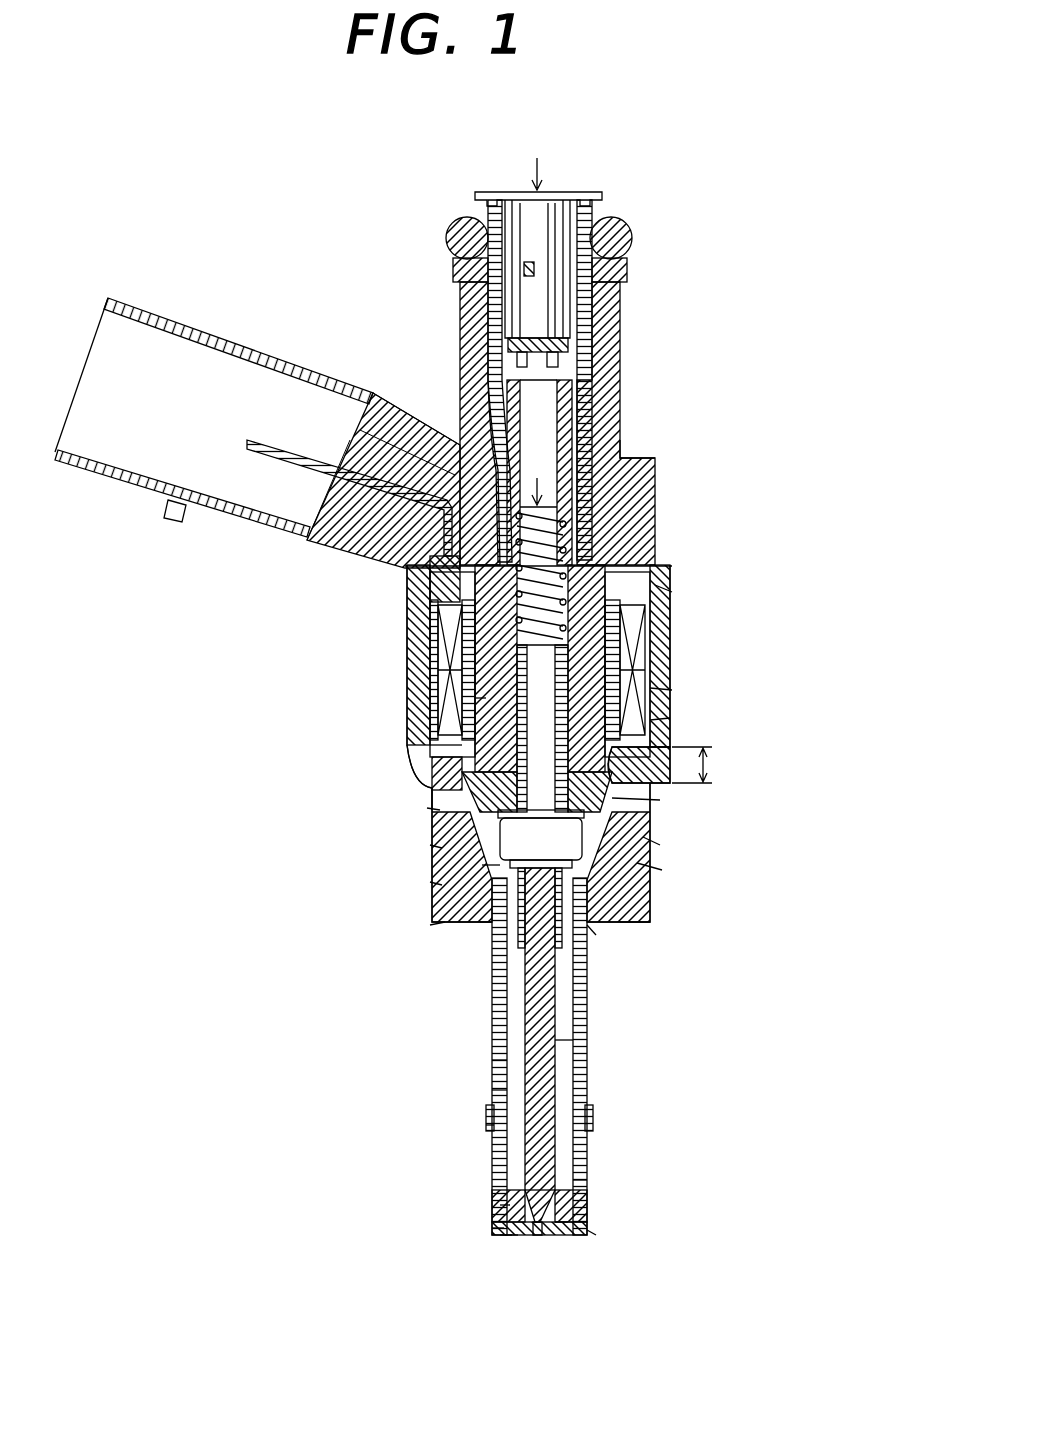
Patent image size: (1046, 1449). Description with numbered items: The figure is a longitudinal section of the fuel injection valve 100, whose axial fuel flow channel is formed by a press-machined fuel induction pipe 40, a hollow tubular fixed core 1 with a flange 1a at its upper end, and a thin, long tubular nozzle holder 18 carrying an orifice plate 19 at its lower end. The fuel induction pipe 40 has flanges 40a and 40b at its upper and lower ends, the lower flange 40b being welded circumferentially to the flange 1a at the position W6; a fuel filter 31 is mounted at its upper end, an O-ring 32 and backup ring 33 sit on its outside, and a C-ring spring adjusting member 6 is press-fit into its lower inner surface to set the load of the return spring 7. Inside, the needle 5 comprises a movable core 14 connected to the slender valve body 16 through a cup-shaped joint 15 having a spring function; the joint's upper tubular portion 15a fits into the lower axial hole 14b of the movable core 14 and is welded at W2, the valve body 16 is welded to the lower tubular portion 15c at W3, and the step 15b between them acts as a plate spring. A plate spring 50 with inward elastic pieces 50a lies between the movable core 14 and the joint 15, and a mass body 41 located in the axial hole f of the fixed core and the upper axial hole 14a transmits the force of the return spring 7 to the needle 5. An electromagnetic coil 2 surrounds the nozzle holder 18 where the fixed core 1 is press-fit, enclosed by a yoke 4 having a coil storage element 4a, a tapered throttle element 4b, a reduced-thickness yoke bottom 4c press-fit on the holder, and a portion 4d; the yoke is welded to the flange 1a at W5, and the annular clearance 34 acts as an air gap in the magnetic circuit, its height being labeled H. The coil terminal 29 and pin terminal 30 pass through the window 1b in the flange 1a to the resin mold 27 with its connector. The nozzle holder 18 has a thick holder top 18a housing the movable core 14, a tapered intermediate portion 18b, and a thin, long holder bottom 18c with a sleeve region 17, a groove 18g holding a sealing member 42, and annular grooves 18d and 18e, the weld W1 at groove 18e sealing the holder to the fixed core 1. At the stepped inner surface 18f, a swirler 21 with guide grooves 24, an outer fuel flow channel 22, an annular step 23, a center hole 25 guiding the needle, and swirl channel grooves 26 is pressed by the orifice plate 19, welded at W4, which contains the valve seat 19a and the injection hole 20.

The fixed core 1 is at (480, 622).
The flange 1a is at (410, 612).
The window 1b is at (405, 605).
The electromagnetic coil 2 is at (632, 632).
The yoke 4 is at (652, 655).
The coil storage element 4a is at (670, 718).
The tapered throttle element 4b is at (427, 808).
The yoke bottom 4c is at (643, 837).
The yoke portion 4d is at (410, 762).
The needle 5 is at (556, 1010).
The spring adjusting member 6 is at (490, 388).
The return spring 7 is at (585, 522).
The movable core 14 is at (432, 815).
The upper axial hole 14a is at (498, 813).
The lower axial hole 14b is at (450, 862).
The joint 15 is at (655, 890).
The upper tubular portion 15a is at (430, 882).
The step 15b is at (630, 922).
The lower tubular portion 15c is at (490, 943).
The valve body 16 is at (575, 1045).
The sleeve 17 is at (492, 1060).
The nozzle holder 18 is at (492, 1000).
The holder top 18a is at (430, 845).
The intermediate portion 18b is at (430, 925).
The holder bottom 18c is at (492, 1090).
The annular groove 18d is at (432, 790).
The annular groove 18e is at (406, 680).
The stepped inner surface 18f is at (496, 1226).
The groove 18g is at (486, 1125).
The orifice plate 19 is at (568, 1237).
The valve seat 19a is at (510, 1236).
The injection hole 20 is at (540, 1238).
The swirler 21 is at (500, 1195).
The fuel flow channel 22 is at (575, 1196).
The annular step 23 is at (588, 1216).
The guide grooves 24 is at (582, 1182).
The center hole 25 is at (500, 1205).
The channel grooves 26 is at (504, 1234).
The resin mold 27 is at (358, 430).
The terminal 29 is at (428, 578).
The pin terminal 30 is at (284, 443).
The fuel filter 31 is at (537, 212).
The O-ring 32 is at (632, 235).
The backup ring 33 is at (627, 268).
The annular clearance 34 is at (672, 760).
The fuel induction pipe 40 is at (621, 408).
The flange 40a is at (475, 193).
The flange 40b is at (300, 540).
The mass body 41 is at (406, 657).
The sealing member 42 is at (594, 1118).
The plate spring 50 is at (640, 823).
The elastic pieces 50a is at (614, 798).
The fuel injection valve 100 is at (636, 452).
The axial hole f is at (410, 705).
The height H is at (702, 765).
The welded section W1 is at (672, 690).
The welded section W2 is at (637, 863).
The welded section W3 is at (590, 930).
The welding section W4 is at (590, 1233).
The welded section W5 is at (668, 590).
The welded section W6 is at (656, 562).